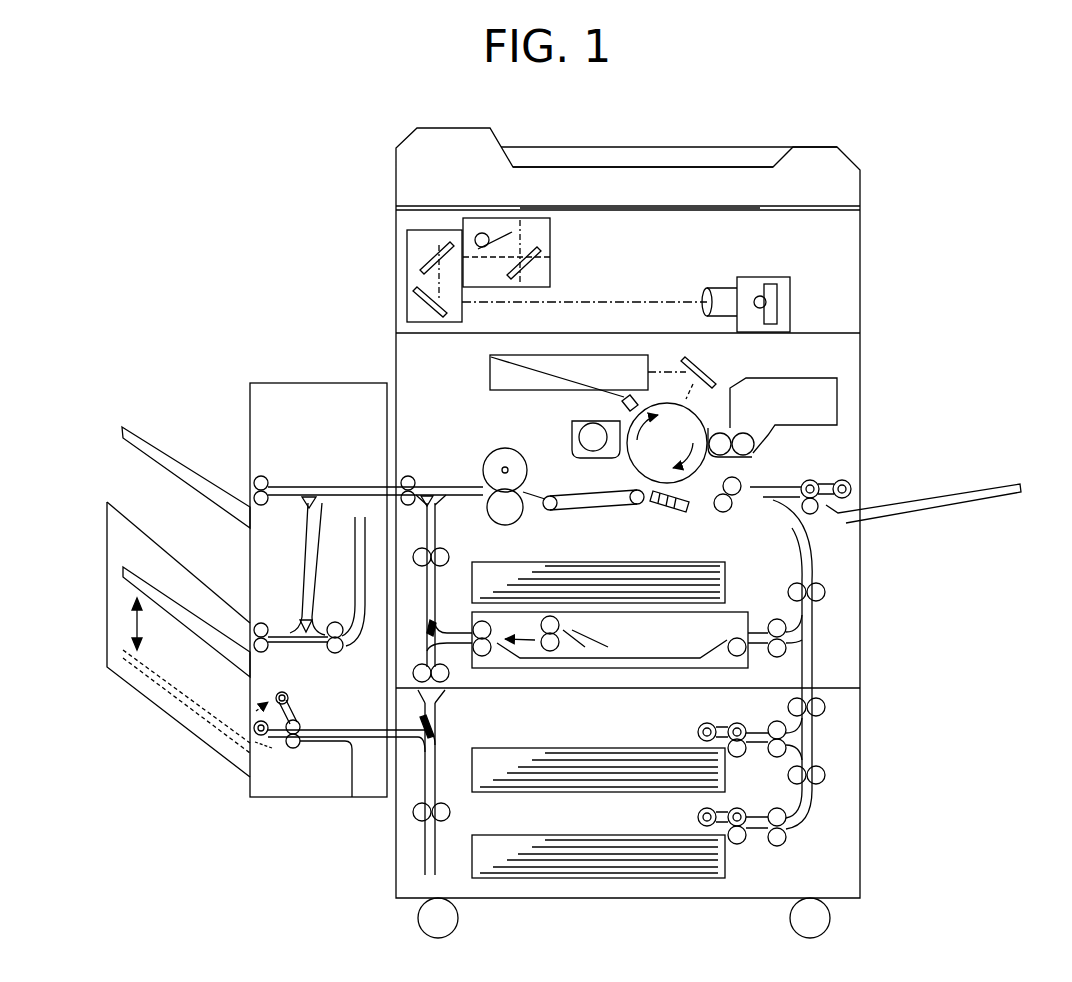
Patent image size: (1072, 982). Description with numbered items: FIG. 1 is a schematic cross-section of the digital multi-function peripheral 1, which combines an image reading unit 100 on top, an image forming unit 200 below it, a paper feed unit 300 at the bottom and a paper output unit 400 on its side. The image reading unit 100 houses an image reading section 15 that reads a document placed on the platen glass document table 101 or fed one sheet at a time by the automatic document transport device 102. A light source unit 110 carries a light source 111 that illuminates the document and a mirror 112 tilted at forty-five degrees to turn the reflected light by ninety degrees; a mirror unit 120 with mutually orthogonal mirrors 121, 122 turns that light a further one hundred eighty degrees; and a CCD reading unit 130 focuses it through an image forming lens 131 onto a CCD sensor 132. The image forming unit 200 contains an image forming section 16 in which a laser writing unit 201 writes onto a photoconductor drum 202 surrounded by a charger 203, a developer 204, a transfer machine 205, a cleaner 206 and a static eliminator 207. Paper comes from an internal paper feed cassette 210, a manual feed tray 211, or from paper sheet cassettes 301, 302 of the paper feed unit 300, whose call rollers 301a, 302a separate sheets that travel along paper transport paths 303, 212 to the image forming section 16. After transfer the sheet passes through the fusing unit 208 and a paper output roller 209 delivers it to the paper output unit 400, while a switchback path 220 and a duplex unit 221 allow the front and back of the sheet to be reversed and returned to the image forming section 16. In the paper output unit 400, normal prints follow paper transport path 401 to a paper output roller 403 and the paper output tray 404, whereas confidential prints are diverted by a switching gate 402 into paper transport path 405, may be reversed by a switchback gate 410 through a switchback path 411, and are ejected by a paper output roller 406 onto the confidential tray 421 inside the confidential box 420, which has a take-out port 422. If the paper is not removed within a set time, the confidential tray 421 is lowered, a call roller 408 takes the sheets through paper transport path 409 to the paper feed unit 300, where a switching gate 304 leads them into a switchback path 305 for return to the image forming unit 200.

The digital multi-function peripheral 1 is at (942, 283).
The image reading section 15 is at (422, 218).
The image forming section 16 is at (823, 367).
The image reading unit 100 is at (863, 246).
The platen glass document table 101 is at (630, 205).
The automatic document transport device 102 is at (708, 185).
The light source unit 110 is at (552, 282).
The light source 111 is at (550, 238).
The mirror 112 is at (552, 259).
The mirror unit 120 is at (465, 320).
The mirror 121 is at (430, 259).
The mirror 122 is at (430, 306).
The CCD reading unit 130 is at (793, 303).
The image forming lens 131 is at (707, 288).
The CCD sensor 132 is at (763, 284).
The image forming unit 200 is at (869, 401).
The laser writing unit 201 is at (512, 392).
The photoconductor drum 202 is at (708, 420).
The charger 203 is at (490, 369).
The developer 204 is at (790, 433).
The transfer machine 205 is at (684, 510).
The cleaner 206 is at (578, 437).
The static eliminator 207 is at (652, 494).
The fusing unit 208 is at (528, 471).
The paper output roller 209 is at (410, 476).
The paper feed cassette 210 is at (513, 558).
The manual feed tray 211 is at (931, 497).
The paper transport path 212 is at (839, 632).
The switchback path 220 is at (438, 533).
The duplex unit 221 is at (556, 668).
The paper feed unit 300 is at (869, 819).
The paper sheet cassette 301 is at (565, 748).
The call roller 301a is at (699, 732).
The paper sheet cassette 302 is at (520, 835).
The call roller 302a is at (699, 818).
The paper transport path 303 is at (814, 752).
The switching gate 304 is at (437, 727).
The switchback path 305 is at (425, 856).
The paper output unit 400 is at (290, 380).
The paper transport path 401 is at (372, 484).
The switching gate 402 is at (310, 496).
The paper output roller 403 is at (258, 478).
The paper output tray 404 is at (153, 446).
The paper transport path 405 is at (310, 547).
The paper output roller 406 is at (250, 622).
The call roller 408 is at (265, 741).
The paper transport path 409 is at (358, 743).
The switchback gate 410 is at (337, 641).
The switchback path 411 is at (345, 652).
The confidential box 420 is at (175, 722).
The confidential tray 421 is at (190, 611).
The take-out port 422 is at (107, 546).